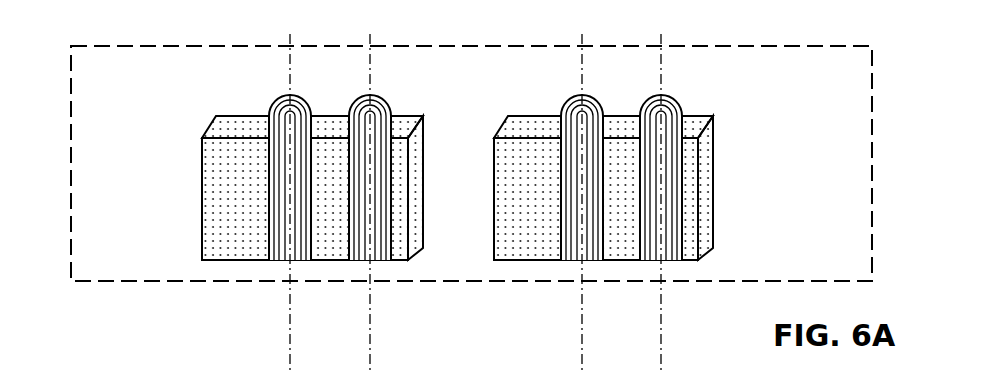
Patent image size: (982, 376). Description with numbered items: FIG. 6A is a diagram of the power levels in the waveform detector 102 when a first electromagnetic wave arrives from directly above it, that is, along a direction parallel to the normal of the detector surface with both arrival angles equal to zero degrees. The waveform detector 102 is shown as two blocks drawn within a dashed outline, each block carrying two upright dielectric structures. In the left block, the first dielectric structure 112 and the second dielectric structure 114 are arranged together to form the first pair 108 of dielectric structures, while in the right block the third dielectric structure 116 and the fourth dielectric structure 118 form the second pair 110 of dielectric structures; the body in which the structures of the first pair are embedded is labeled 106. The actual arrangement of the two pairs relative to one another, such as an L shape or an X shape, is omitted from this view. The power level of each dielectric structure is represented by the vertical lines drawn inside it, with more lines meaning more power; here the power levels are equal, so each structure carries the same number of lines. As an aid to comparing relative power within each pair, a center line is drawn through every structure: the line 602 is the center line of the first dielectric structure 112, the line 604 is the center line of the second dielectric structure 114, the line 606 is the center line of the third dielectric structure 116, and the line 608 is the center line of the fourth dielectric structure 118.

The waveform detector 102 is at (132, 44).
The dielectric material 106 is at (202, 160).
The first pair of dielectric structures 108 is at (276, 166).
The second pair of dielectric structures 110 is at (658, 166).
The first dielectric structure 112 is at (276, 97).
The second dielectric structure 114 is at (384, 97).
The third dielectric structure 116 is at (568, 97).
The fourth dielectric structure 118 is at (676, 97).
The center line of the first dielectric structure 602 is at (290, 34).
The center line of the second dielectric structure 604 is at (370, 34).
The center line of the third dielectric structure 606 is at (582, 34).
The center line of the fourth dielectric structure 608 is at (661, 34).